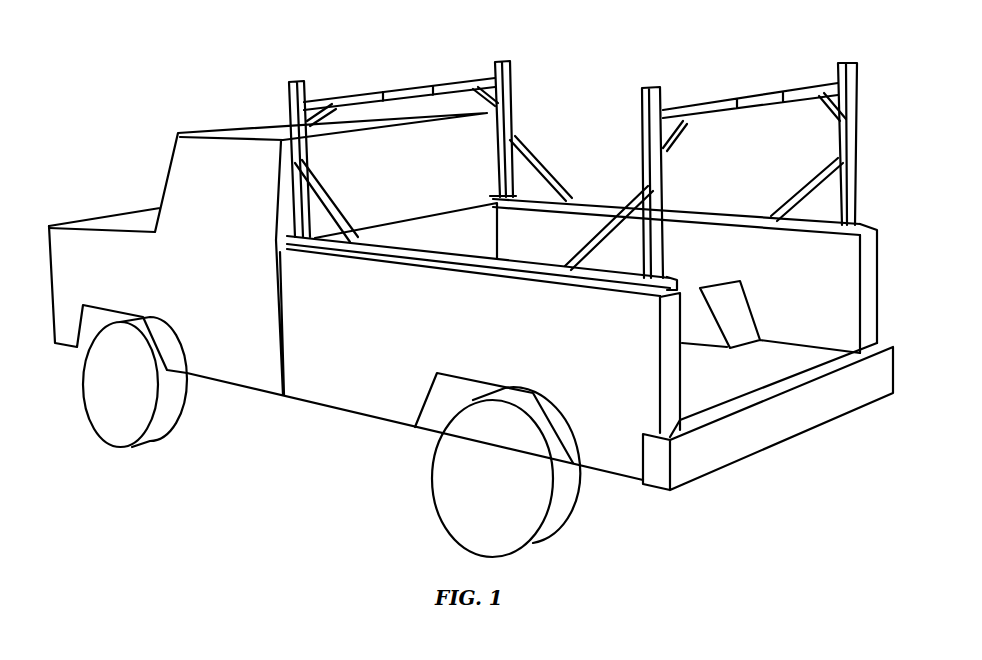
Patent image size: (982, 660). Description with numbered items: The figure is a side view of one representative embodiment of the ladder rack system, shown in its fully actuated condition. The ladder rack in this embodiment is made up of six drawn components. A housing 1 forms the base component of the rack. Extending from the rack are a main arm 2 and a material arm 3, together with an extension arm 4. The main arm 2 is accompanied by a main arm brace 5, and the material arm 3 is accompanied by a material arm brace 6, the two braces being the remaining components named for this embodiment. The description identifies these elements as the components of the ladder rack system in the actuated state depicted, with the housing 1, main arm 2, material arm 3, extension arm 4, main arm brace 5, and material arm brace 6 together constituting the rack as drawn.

The housing 1 is at (573, 157).
The main arm 2 is at (510, 61).
The material arm 3 is at (345, 97).
The extension arm 4 is at (755, 102).
The main arm brace 5 is at (547, 173).
The material arm brace 6 is at (832, 108).